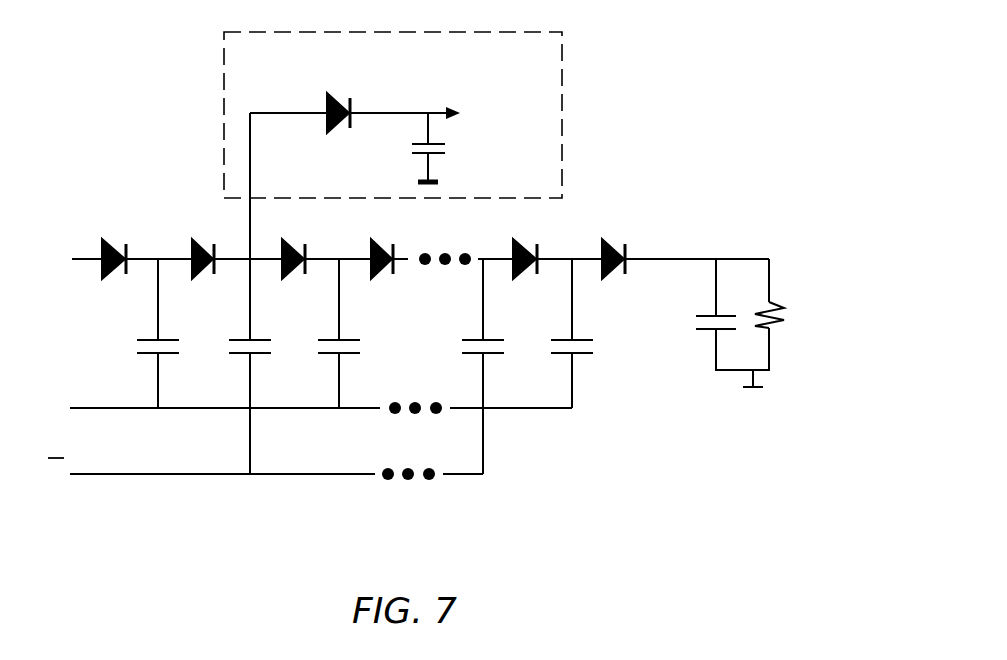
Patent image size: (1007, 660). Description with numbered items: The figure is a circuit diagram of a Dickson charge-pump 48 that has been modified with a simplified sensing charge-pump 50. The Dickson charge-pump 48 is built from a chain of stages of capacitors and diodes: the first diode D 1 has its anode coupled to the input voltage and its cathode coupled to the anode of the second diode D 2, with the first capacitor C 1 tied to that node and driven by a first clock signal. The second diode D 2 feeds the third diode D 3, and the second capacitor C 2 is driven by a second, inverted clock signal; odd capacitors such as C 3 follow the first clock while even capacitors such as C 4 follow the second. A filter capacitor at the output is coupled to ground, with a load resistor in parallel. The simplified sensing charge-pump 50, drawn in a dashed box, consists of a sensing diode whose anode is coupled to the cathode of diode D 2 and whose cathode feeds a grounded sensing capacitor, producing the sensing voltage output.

The Dickson charge-pump 48 is at (596, 80).
The simplified sensing charge-pump 50 is at (546, 63).
The diode D1 1 is at (124, 248).
The diode D2 2 is at (209, 248).
The diode D3 3 is at (302, 248).
The diode D4 4 is at (390, 248).